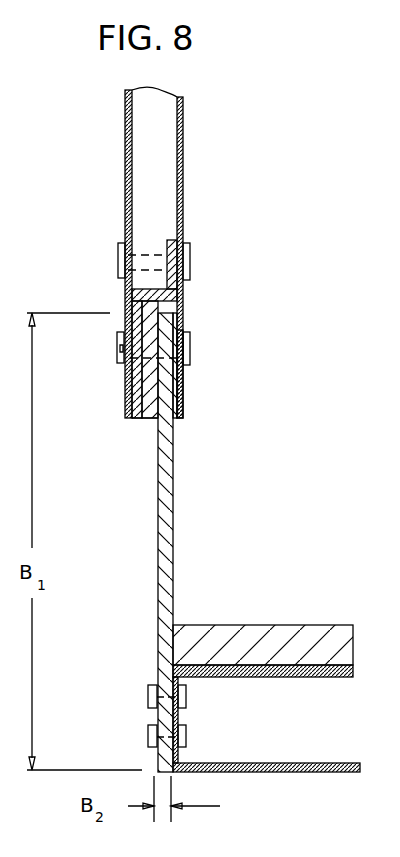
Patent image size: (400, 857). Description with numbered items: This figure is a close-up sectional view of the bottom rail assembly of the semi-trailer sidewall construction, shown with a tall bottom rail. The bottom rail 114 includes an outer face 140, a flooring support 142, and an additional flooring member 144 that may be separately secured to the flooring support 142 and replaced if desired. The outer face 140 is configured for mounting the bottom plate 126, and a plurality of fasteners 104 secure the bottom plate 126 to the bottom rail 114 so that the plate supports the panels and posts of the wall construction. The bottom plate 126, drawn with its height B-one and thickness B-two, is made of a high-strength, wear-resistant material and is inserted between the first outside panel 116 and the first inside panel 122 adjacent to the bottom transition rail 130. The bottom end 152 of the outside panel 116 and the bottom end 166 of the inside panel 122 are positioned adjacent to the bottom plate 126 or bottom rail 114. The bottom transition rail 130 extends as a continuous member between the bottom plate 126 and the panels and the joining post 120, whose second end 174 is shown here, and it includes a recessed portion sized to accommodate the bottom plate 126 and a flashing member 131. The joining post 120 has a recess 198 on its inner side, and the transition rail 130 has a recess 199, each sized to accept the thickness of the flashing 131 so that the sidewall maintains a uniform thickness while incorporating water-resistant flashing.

The fasteners 104 is at (190, 245).
The bottom rail 114 is at (303, 775).
The first outside panel 116 is at (125, 157).
The joining post 120 is at (150, 108).
The first inside panel 122 is at (183, 162).
The bottom plate 126 is at (173, 532).
The bottom transition rail 130 is at (150, 407).
The flashing member 131 is at (135, 300).
The outer face 140 is at (179, 756).
The flooring support 142 is at (285, 678).
The flooring member 144 is at (278, 638).
The bottom end 152 is at (124, 418).
The bottom end 166 is at (183, 403).
The second end 174 is at (147, 237).
The recess 198 is at (168, 240).
The recess 199 is at (122, 353).